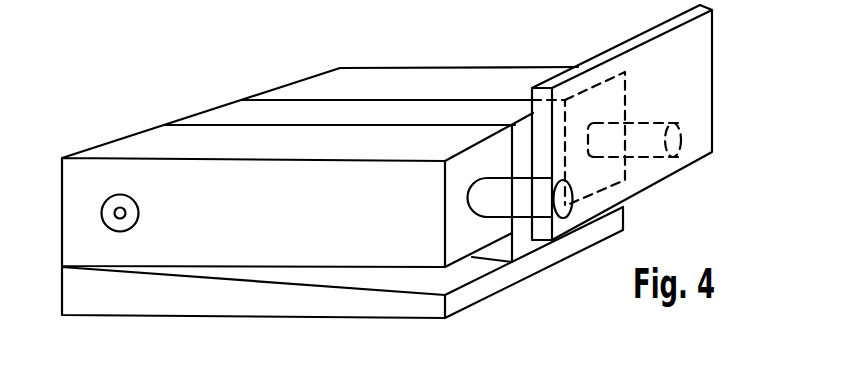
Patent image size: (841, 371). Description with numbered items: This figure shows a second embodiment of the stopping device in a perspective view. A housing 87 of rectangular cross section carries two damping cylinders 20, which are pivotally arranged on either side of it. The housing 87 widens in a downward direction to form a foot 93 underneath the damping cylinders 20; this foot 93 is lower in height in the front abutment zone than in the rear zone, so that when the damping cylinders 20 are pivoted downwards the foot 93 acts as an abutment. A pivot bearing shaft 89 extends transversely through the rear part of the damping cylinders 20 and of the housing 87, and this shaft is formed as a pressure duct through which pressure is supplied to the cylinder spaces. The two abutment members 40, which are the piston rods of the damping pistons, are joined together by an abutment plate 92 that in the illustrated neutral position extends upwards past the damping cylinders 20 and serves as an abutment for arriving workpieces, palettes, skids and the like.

The damping cylinder 20 is at (173, 145).
The housing 87 is at (252, 110).
The pivot bearing shaft 89 is at (101, 214).
The abutment member 40 is at (520, 208).
The abutment plate 92 is at (695, 45).
The foot 93 is at (465, 297).